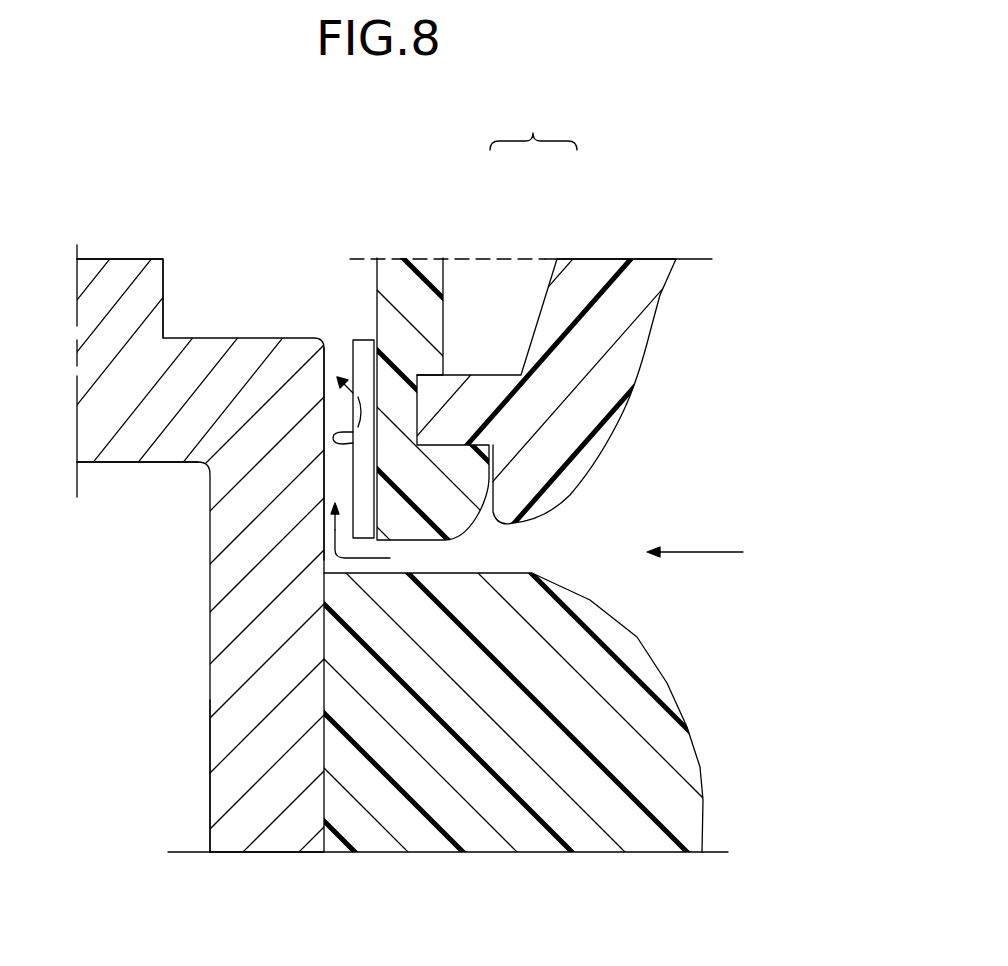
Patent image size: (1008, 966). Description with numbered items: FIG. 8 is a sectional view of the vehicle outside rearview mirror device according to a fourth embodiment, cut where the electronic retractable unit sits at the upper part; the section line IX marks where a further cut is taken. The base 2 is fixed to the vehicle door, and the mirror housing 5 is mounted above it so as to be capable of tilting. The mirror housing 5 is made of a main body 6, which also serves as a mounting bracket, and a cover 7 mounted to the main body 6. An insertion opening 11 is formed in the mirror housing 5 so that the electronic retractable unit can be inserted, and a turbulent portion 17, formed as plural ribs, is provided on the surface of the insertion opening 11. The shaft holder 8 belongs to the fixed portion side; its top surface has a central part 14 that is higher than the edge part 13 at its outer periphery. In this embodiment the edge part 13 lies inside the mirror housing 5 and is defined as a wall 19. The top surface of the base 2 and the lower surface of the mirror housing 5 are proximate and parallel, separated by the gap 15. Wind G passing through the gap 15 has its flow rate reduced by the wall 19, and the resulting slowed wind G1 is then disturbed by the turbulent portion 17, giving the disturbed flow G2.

The base 2 is at (425, 838).
The mirror housing 5 is at (533, 126).
The main body 6 is at (432, 267).
The cover 7 is at (587, 273).
The shaft holder 8 is at (285, 838).
The insertion opening 11 is at (372, 278).
The edge part 13 is at (218, 350).
The central part 14 is at (123, 270).
The gap 15 is at (503, 552).
The turbulent portion 17 is at (362, 350).
The wall 19 is at (317, 417).
The wind G is at (707, 552).
The wind with reduced flow rate G1 is at (327, 537).
The disturbed wind flow G2 is at (323, 452).
The section line IX is at (43, 284).